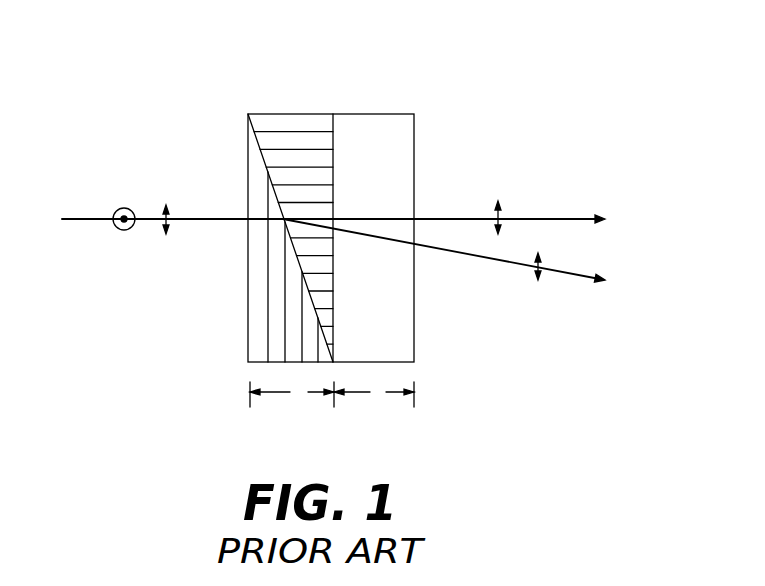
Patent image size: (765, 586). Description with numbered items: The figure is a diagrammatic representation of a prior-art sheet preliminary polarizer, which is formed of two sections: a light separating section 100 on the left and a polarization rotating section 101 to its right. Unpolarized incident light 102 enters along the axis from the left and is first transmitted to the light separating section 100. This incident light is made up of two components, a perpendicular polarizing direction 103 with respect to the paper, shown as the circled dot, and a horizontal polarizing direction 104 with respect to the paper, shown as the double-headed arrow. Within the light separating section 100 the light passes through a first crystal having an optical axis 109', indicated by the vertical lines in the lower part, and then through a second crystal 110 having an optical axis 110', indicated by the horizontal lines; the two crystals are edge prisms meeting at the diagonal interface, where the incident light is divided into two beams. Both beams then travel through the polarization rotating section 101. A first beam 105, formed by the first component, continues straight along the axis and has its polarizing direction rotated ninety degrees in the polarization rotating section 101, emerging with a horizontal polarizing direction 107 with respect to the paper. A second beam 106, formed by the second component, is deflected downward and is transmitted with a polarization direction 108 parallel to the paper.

The light separating section 100 is at (301, 384).
The polarization rotating section 101 is at (381, 384).
The unpolarized incident light 102 is at (82, 219).
The perpendicular polarizing direction 103 is at (124, 230).
The horizontal polarizing direction 104 is at (164, 236).
The first beam 105 is at (580, 212).
The second beam 106 is at (583, 281).
The horizontal polarizing direction 107 is at (495, 213).
The polarization direction 108 is at (540, 280).
The optical axis 109' is at (255, 269).
The second crystal 110 is at (331, 194).
The optical axis 110' is at (274, 198).